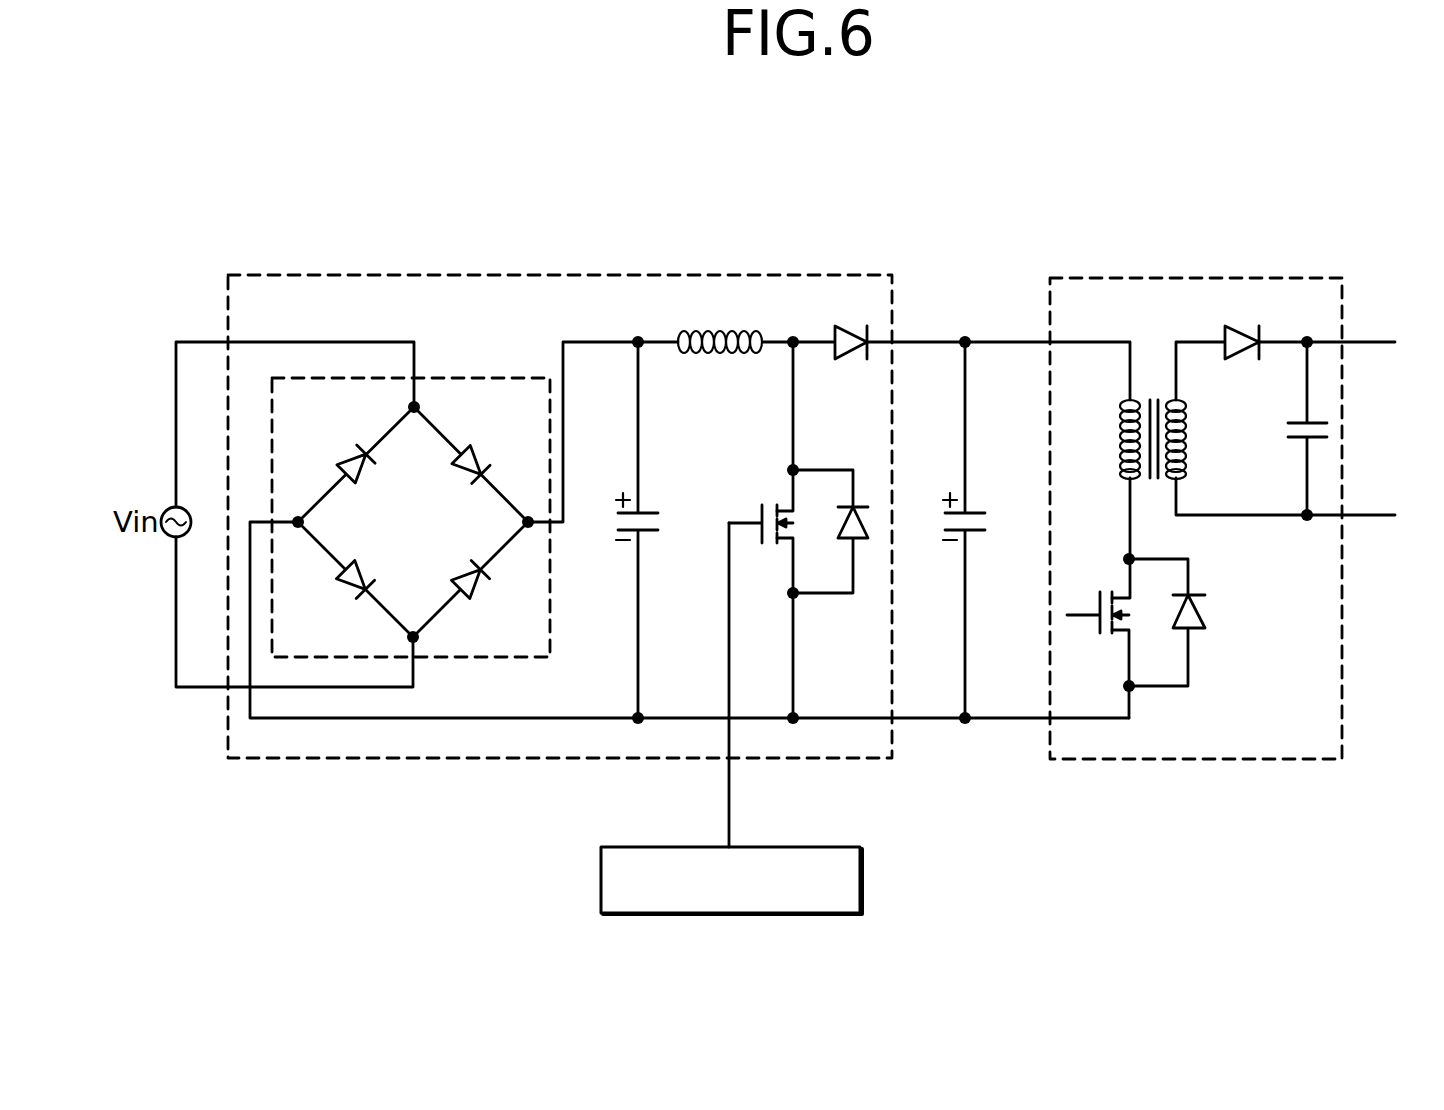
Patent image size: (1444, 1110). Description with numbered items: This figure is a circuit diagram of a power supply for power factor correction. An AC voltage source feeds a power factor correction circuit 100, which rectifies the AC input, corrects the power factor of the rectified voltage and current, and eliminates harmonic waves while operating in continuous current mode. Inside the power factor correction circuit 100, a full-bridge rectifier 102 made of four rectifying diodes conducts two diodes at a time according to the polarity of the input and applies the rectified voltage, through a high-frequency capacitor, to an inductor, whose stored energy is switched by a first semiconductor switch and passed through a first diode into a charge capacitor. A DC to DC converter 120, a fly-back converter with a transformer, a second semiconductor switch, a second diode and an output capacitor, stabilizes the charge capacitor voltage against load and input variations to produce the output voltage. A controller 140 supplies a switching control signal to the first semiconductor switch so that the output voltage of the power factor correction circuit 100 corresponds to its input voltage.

The power factor correction circuit 100 is at (560, 275).
The full-bridge rectifier 102 is at (480, 378).
The DC to DC converter 120 is at (1241, 278).
The controller 140 is at (827, 847).